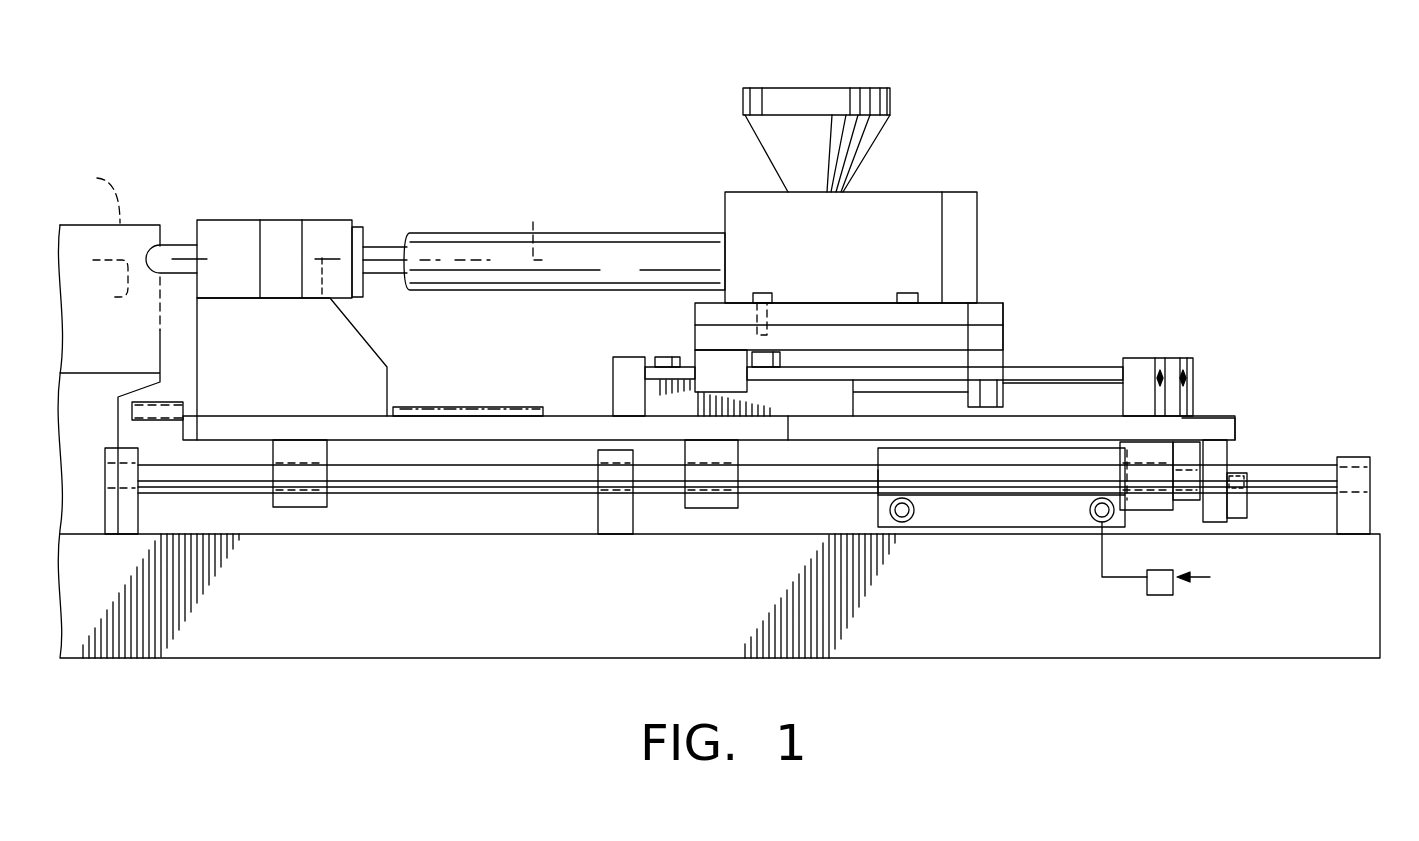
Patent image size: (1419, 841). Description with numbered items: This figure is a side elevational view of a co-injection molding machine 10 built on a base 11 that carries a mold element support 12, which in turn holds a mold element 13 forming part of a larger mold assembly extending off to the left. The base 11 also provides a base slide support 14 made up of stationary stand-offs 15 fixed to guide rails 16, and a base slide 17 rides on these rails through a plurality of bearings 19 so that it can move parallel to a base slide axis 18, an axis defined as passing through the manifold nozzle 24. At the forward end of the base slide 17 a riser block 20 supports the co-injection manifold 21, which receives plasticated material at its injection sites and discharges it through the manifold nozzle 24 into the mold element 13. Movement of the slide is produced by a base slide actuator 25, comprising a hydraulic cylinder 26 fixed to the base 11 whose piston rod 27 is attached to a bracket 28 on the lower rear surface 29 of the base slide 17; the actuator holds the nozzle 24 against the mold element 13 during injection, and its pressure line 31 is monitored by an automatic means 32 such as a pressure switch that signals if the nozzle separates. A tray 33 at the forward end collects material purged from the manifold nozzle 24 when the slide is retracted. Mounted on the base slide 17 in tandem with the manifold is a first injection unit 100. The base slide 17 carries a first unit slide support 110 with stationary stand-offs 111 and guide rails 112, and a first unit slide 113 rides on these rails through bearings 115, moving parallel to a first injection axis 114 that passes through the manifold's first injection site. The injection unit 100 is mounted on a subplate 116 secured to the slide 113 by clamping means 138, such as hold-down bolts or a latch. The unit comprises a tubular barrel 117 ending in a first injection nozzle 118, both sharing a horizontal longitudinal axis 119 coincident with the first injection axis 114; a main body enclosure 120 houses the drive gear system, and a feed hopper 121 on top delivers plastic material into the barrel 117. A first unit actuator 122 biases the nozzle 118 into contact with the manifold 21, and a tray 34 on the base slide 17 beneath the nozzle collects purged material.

The co-injection molding machine 10 is at (1090, 178).
The base 11 is at (737, 612).
The mold element support 12 is at (103, 435).
The mold element 13 is at (93, 189).
The base slide support 14 is at (1322, 455).
The stationary stand-offs 15 is at (140, 517).
The guide rails 16 is at (1268, 497).
The base slide 17 is at (1223, 416).
The base slide axis 18 is at (126, 299).
The bearings 19 is at (298, 507).
The riser block 20 is at (372, 346).
The co-injection manifold 21 is at (294, 214).
The manifold nozzle 24 is at (178, 243).
The base slide actuator 25 is at (866, 511).
The hydraulic cylinder 26 is at (958, 530).
The piston rod 27 is at (1188, 500).
The bracket 28 is at (1215, 522).
The lower rear surface 29 is at (1237, 443).
The pressure line 31 is at (1118, 577).
The automatic means 32 is at (1160, 595).
The tray 33 is at (185, 400).
The tray 34 is at (470, 407).
The first injection unit 100 is at (905, 185).
The first unit slide support 110 is at (1123, 347).
The stationary stand-offs 111 is at (1180, 357).
The guide rails 112 is at (1035, 367).
The first unit slide 113 is at (695, 335).
The first injection axis 114 is at (320, 300).
The bearings 115 is at (713, 360).
The subplate 116 is at (1005, 313).
The tubular barrel 117 is at (585, 233).
The first injection nozzle 118 is at (380, 243).
The longitudinal axis 119 is at (533, 222).
The main body enclosure 120 is at (722, 192).
The feed hopper 121 is at (743, 100).
The first unit actuator 122 is at (830, 415).
The clamping means 138 is at (758, 293).